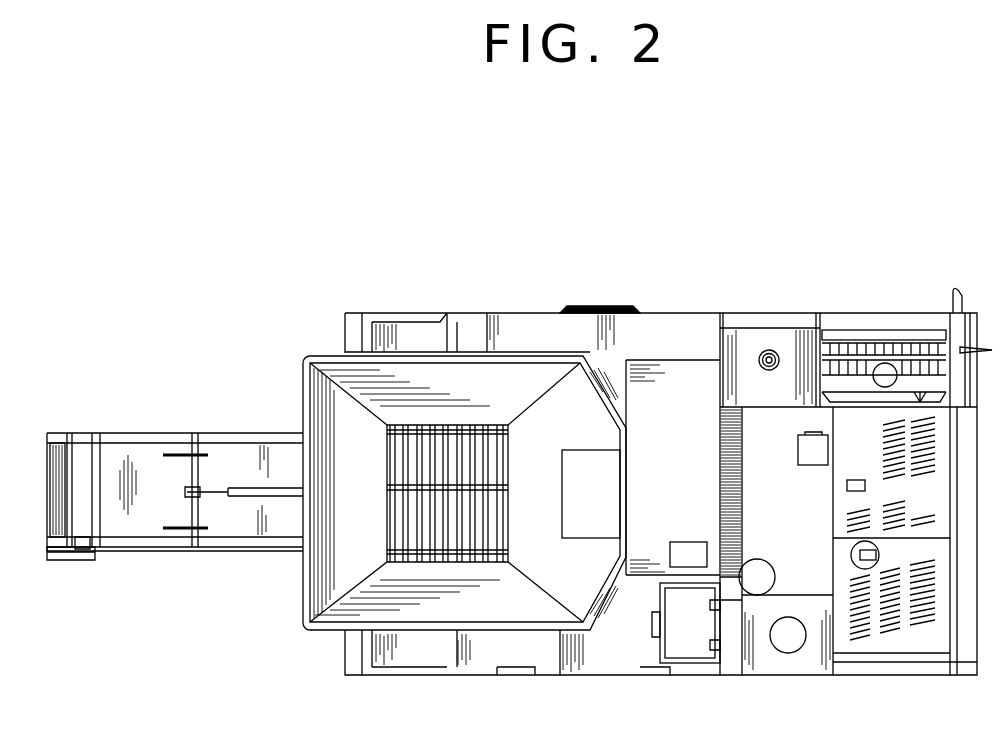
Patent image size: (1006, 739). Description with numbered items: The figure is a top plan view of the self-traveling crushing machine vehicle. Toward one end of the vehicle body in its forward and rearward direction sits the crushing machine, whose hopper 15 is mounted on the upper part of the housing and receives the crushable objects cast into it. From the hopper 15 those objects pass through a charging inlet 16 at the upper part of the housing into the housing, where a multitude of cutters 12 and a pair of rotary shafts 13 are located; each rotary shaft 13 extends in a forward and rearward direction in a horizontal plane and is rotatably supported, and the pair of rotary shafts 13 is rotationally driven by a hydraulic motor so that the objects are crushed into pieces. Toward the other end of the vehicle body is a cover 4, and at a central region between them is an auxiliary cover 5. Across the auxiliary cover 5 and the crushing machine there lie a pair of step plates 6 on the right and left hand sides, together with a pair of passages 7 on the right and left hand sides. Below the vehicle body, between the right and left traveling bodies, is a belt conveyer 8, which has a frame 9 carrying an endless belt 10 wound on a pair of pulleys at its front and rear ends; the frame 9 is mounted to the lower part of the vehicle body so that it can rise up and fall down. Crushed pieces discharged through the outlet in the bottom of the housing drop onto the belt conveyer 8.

The cover 4 is at (905, 632).
The auxiliary cover 5 is at (710, 388).
The step plates 6 is at (643, 330).
The passages 7 is at (689, 325).
The belt conveyer 8 is at (221, 561).
The frame 9 is at (143, 548).
The endless belt 10 is at (137, 462).
The cutters 12 is at (490, 428).
The rotary shafts 13 is at (498, 470).
The hopper 15 is at (312, 350).
The charging inlet 16 is at (382, 463).